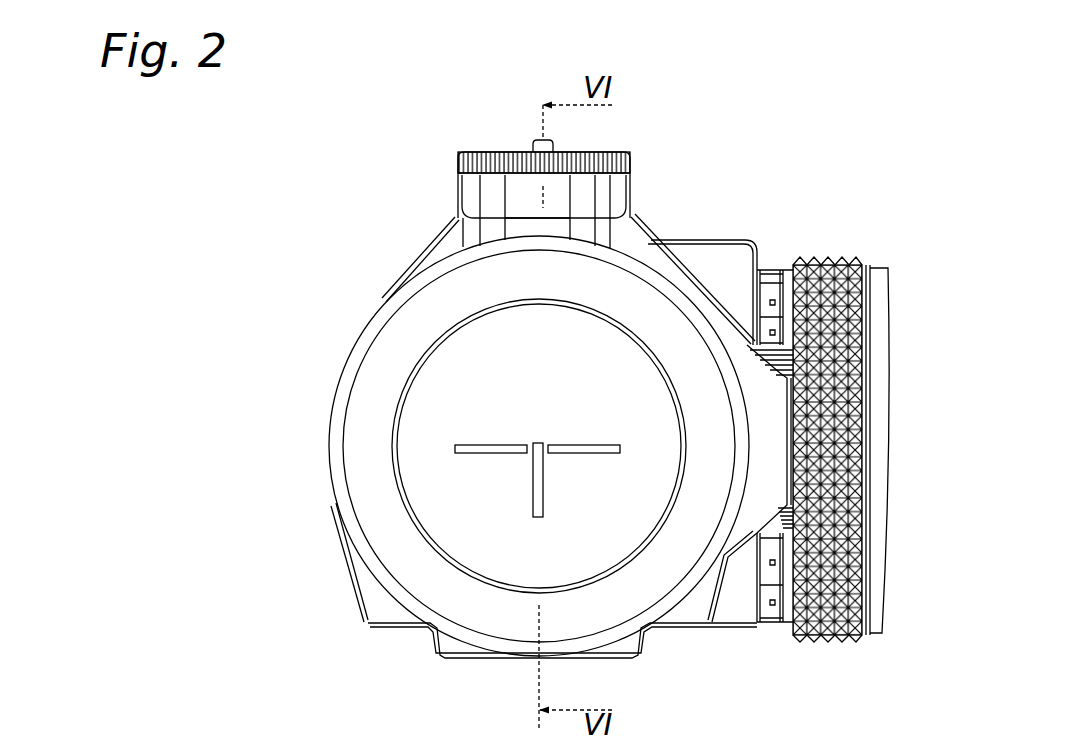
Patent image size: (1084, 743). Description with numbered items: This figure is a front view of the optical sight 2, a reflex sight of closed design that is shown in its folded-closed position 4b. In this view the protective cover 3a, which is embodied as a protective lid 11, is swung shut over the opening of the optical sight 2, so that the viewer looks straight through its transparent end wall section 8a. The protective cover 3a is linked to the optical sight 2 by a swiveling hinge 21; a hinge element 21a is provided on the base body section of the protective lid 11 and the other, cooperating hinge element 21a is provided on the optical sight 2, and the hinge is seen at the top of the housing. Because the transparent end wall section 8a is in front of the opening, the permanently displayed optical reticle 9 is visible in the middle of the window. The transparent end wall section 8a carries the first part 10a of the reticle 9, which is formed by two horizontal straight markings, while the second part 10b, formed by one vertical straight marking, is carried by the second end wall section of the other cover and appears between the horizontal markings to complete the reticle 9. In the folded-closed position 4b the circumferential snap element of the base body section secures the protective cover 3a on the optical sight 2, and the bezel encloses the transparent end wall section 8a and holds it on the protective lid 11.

The optical sight 2 is at (700, 268).
The swiveling hinge 21 is at (596, 191).
The hinge element 21a is at (540, 224).
The protective cover 3a is at (388, 366).
The folded-closed position 4b is at (275, 357).
The protective lid 11 is at (378, 400).
The transparent end wall section 8a is at (440, 485).
The reticle 9 is at (549, 461).
The first part of the reticle 10a is at (500, 443).
The second part of the reticle 10b is at (543, 490).